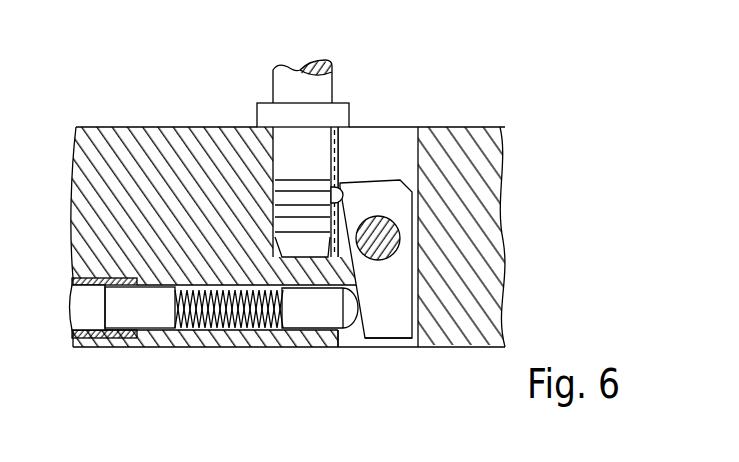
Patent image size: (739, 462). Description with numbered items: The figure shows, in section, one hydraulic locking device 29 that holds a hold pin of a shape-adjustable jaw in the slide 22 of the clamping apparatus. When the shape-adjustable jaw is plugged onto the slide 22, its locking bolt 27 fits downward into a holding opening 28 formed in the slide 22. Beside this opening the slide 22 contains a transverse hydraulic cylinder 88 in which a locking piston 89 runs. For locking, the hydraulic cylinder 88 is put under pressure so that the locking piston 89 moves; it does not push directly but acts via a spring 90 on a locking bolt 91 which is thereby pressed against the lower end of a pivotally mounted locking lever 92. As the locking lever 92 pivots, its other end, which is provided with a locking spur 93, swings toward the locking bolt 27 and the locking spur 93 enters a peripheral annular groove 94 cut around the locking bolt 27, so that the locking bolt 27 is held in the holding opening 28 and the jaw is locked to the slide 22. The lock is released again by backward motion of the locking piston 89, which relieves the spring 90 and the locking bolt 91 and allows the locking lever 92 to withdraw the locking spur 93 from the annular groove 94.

The slide 22 is at (128, 153).
The locking bolt 27 is at (325, 140).
The holding opening 28 is at (275, 148).
The locking device 29 is at (365, 352).
The hydraulic cylinder 88 is at (92, 312).
The locking piston 89 is at (151, 312).
The spring 90 is at (232, 330).
The locking bolt 91 is at (313, 310).
The locking lever 92 is at (398, 308).
The locking spur 93 is at (342, 188).
The peripheral annular groove 94 is at (273, 200).